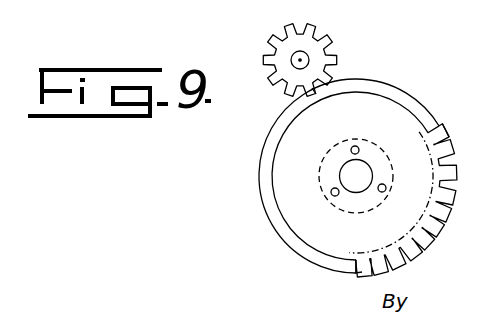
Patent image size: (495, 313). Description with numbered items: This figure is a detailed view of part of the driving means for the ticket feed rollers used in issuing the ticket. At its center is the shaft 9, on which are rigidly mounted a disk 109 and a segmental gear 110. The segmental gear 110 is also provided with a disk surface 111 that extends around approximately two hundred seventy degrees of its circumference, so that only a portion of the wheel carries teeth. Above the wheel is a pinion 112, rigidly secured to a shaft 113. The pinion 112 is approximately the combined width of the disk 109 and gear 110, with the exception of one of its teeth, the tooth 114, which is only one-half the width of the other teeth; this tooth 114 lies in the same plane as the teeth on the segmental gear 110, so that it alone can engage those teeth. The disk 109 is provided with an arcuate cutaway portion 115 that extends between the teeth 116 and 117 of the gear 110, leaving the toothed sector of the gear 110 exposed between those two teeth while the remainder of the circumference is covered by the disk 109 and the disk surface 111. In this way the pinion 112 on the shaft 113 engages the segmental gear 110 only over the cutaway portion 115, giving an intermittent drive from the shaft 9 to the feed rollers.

The shaft 9 is at (340, 171).
The disk 109 is at (400, 95).
The segmental gear 110 is at (412, 139).
The disk surface 111 is at (372, 93).
The pinion 112 is at (307, 33).
The shaft 113 is at (309, 57).
The tooth 114 is at (312, 89).
The arcuate cutaway portion 115 is at (447, 184).
The tooth 116 is at (447, 133).
The tooth 117 is at (362, 272).